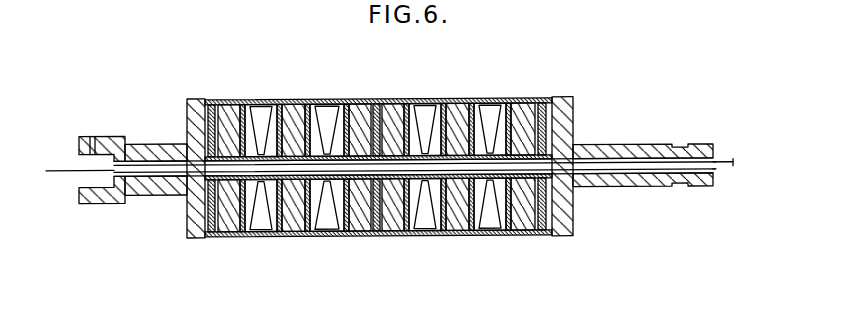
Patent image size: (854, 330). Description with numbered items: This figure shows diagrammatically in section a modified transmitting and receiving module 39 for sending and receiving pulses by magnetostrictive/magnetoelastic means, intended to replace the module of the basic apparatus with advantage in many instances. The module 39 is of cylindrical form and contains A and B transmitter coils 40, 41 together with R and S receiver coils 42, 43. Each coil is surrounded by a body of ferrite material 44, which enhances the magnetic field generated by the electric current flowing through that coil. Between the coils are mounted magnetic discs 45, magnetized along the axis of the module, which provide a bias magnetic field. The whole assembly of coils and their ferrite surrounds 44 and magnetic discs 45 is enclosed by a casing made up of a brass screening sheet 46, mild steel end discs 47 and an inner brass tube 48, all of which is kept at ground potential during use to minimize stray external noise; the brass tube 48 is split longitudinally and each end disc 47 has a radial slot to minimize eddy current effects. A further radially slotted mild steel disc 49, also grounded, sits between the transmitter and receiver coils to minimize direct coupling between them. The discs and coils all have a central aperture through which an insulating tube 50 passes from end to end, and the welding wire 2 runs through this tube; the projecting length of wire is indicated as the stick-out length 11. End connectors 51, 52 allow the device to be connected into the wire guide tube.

The wire 2 is at (715, 173).
The stick-out length of wire 11 is at (733, 162).
The transmitting and receiving module 39 is at (470, 100).
The A transmitter coil 40 is at (425, 215).
The B transmitter coil 41 is at (492, 218).
The R receiver coil 42 is at (262, 215).
The S receiver coil 43 is at (334, 218).
The body of ferrite material 44 is at (229, 220).
The magnetic discs 45 is at (227, 100).
The brass screening sheet 46 is at (262, 100).
The mild steel end discs 47 is at (210, 100).
The inner brass tube 48 is at (267, 160).
The radially slotted mild steel disc 49 is at (378, 238).
The insulating tube 50 is at (147, 166).
The end connector 51 is at (620, 153).
The end connector 52 is at (89, 136).